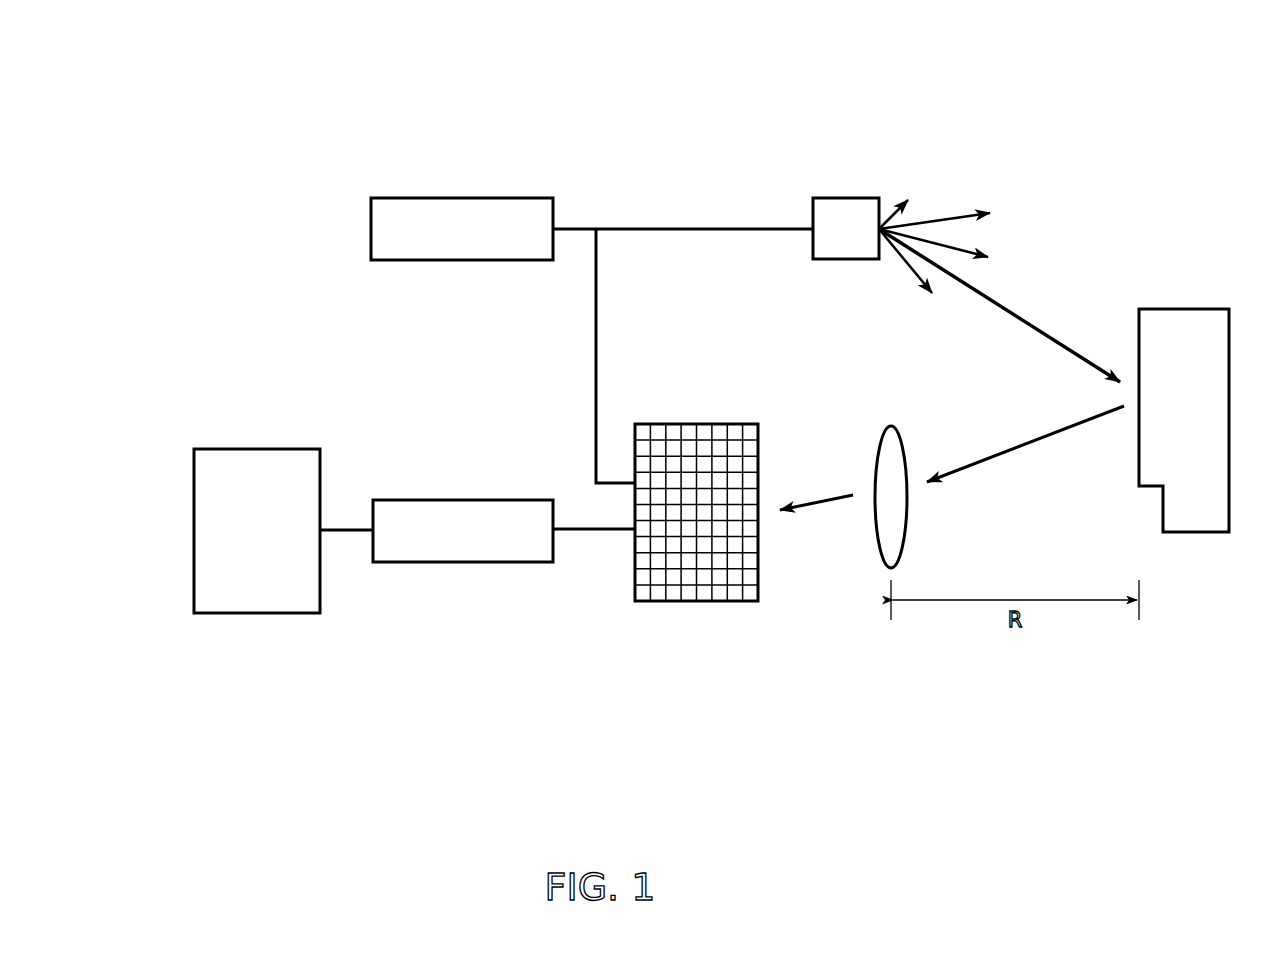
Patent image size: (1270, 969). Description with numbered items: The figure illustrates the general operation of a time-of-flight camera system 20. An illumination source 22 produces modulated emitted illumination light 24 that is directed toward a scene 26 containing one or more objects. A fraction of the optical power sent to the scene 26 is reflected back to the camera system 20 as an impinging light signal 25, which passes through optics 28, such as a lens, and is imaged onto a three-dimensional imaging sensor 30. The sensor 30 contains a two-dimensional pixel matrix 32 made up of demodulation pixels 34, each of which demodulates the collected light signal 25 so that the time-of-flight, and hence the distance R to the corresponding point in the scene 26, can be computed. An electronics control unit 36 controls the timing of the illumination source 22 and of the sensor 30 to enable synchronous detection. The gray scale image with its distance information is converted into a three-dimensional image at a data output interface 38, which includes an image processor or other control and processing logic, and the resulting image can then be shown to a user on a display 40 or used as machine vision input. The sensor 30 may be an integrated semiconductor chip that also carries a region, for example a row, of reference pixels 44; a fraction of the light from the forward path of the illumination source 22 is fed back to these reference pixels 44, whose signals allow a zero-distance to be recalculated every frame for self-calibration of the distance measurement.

The TOF camera system 20 is at (937, 106).
The illumination source 22 is at (813, 217).
The emitted illumination light 24 is at (1015, 305).
The impinging light signal 25 is at (815, 497).
The scene 26 is at (1132, 336).
The optics 28 is at (914, 526).
The 3D imaging sensor 30 is at (704, 544).
The 2D pixel matrix 32 is at (635, 573).
The demodulation pixel 34 is at (672, 583).
The electronics control unit 36 is at (371, 238).
The data output interface 38 is at (449, 562).
The display 40 is at (245, 449).
The reference pixel 44 is at (758, 601).